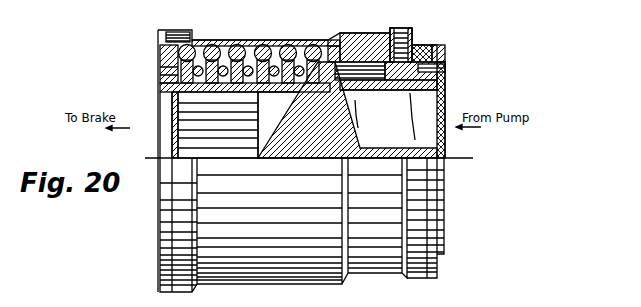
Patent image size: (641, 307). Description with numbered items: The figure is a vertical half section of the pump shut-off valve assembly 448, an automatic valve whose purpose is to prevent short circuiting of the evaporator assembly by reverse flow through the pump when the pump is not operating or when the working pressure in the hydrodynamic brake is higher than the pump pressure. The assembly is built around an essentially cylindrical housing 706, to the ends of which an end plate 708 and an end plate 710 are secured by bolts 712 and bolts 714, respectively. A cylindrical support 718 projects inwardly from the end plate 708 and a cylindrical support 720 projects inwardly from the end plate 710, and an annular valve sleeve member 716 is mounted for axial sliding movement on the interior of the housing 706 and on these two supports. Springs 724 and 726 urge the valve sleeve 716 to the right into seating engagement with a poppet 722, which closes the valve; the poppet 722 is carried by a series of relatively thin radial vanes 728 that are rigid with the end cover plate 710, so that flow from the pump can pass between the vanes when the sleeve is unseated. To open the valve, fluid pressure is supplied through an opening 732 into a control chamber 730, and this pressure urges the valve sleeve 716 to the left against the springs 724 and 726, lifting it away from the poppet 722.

The bolt 712 is at (172, 31).
The cylindrical housing 706 is at (226, 40).
The end plate 708 is at (160, 70).
The spring 724 is at (264, 44).
The spring 726 is at (301, 44).
The pump shut-off valve assembly 448 is at (329, 34).
The annular valve sleeve member 716 is at (355, 52).
The opening 732 is at (398, 28).
The control chamber 730 is at (421, 46).
The bolt 714 is at (438, 50).
The end plate 710 is at (445, 68).
The cylindrical support 718 is at (258, 105).
The poppet 722 is at (300, 113).
The cylindrical support 720 is at (383, 91).
The radial vanes 728 is at (433, 121).